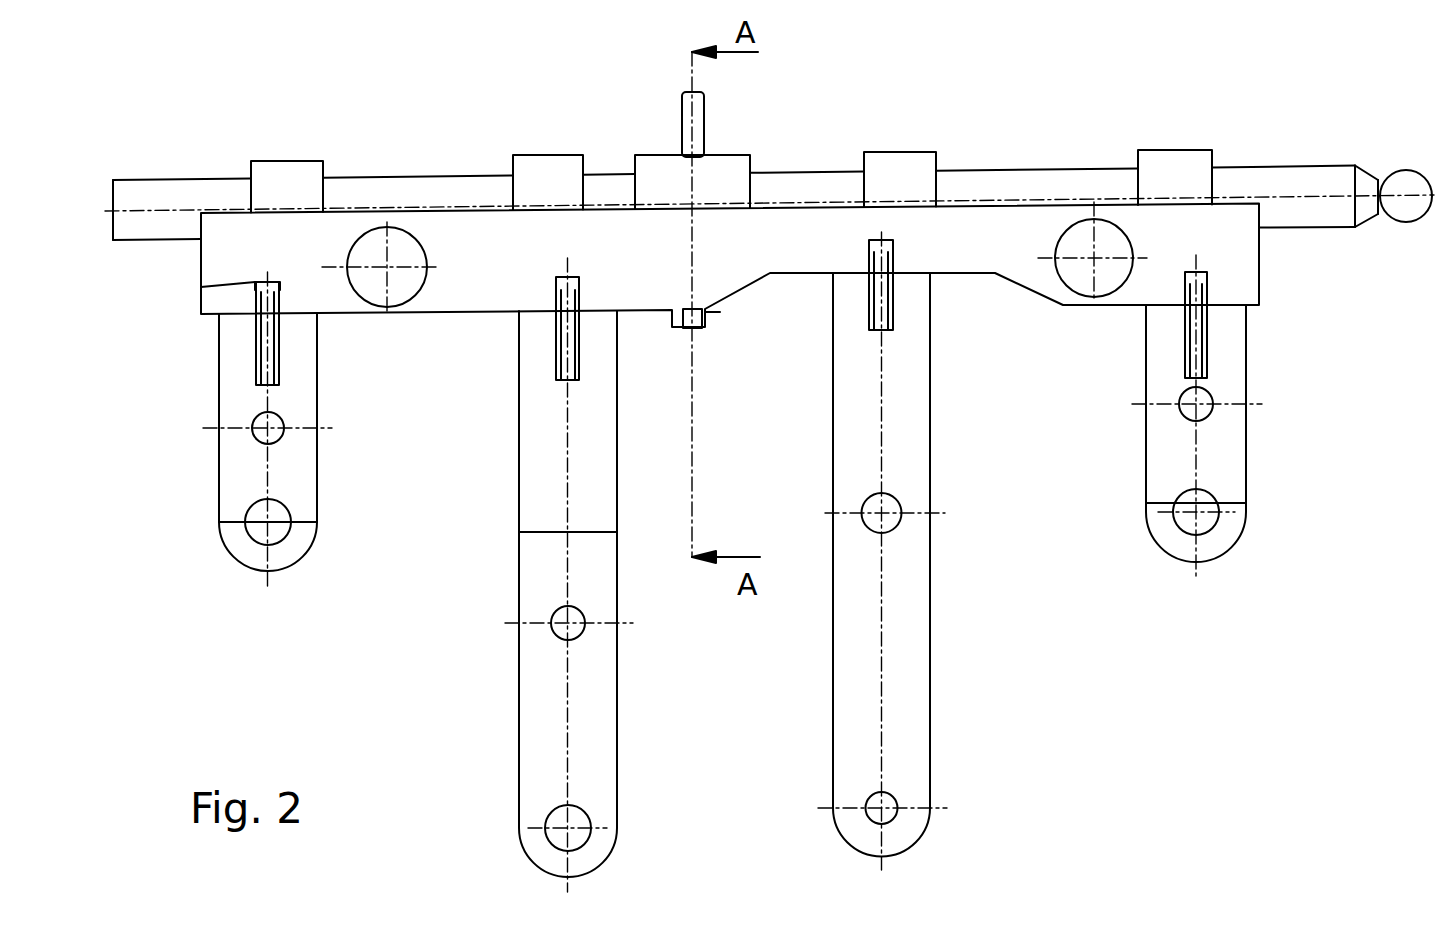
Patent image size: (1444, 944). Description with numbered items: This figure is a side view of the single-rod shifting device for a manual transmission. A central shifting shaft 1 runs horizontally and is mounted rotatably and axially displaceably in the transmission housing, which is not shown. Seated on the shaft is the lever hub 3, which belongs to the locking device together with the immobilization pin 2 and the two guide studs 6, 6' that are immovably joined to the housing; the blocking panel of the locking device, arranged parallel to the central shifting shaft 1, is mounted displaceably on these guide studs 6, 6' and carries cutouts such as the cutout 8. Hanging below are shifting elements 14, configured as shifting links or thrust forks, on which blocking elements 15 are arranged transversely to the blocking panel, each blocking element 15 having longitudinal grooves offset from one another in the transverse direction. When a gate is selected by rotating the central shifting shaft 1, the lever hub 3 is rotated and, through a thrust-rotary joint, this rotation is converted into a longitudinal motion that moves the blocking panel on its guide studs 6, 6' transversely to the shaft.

The central shifting shaft 1 is at (188, 195).
The immobilization pin 2 is at (697, 118).
The lever hub 3 is at (720, 165).
The guide stud 6 is at (399, 312).
The guide stud 6' is at (1092, 312).
The cutout 8 is at (256, 284).
The shifting element 14 is at (300, 462).
The blocking element 15 is at (265, 361).